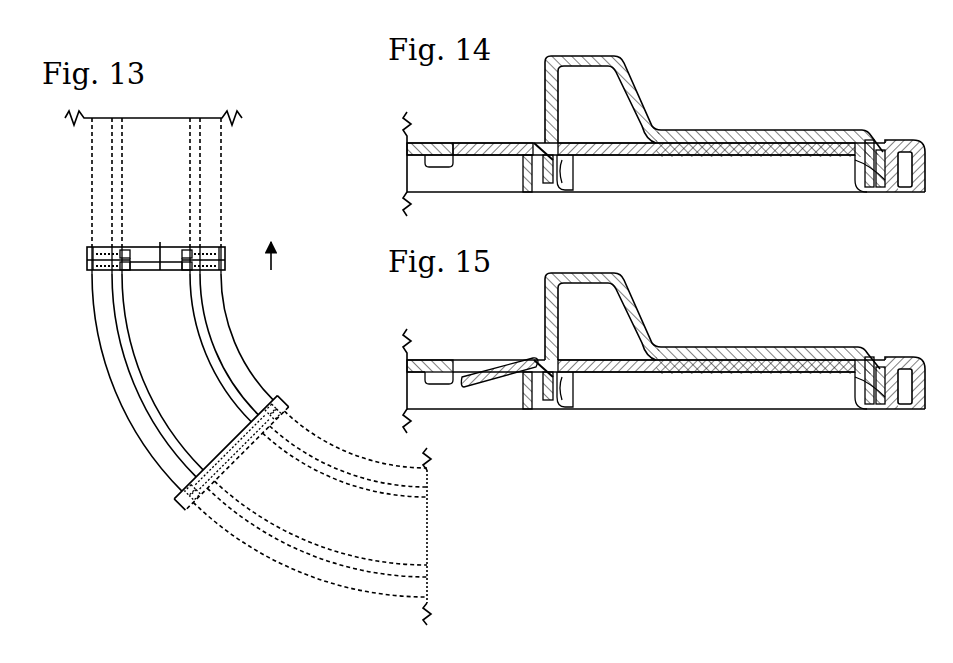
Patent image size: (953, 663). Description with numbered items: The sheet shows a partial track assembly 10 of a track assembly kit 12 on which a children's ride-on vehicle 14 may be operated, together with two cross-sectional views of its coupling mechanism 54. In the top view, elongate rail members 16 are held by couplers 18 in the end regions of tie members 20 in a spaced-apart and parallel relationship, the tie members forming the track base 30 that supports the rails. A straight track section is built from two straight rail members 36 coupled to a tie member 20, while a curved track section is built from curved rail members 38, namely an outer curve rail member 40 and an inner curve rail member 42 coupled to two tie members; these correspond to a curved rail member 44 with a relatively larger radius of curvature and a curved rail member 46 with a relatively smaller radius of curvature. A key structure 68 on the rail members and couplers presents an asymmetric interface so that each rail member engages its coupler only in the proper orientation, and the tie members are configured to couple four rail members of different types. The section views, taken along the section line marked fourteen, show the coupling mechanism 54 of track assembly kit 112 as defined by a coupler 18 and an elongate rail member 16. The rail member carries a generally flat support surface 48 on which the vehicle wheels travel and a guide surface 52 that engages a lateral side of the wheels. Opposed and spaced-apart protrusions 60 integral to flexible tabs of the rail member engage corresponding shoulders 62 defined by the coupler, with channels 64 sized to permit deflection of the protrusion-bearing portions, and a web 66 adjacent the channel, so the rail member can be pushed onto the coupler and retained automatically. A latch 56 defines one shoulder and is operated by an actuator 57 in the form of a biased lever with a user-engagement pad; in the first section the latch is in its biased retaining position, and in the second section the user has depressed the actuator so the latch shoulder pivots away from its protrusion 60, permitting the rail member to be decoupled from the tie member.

In FIG. 13, the track assembly 10 is at (208, 90).
In FIG. 14, the track assembly kit 12 is at (917, 58).
In FIG. 15, the track assembly kit 12 is at (928, 262).
In FIG. 13, the children's ride-on vehicle 14 is at (278, 267).
In FIG. 13, the elongate rail member 16 is at (90, 152).
In FIG. 14, the elongate rail member 16 is at (600, 55).
In FIG. 15, the elongate rail member 16 is at (603, 307).
In FIG. 13, the coupler 18 is at (86, 258).
In FIG. 14, the coupler 18 is at (751, 210).
In FIG. 15, the coupler 18 is at (732, 441).
In FIG. 13, the tie member 20 is at (147, 244).
In FIG. 14, the tie member 20 is at (726, 197).
In FIG. 15, the tie member 20 is at (706, 428).
In FIG. 13, the track base 30 is at (148, 271).
In FIG. 13, the straight rail member 36 is at (92, 182).
In FIG. 13, the curved rail member 38 is at (100, 340).
In FIG. 13, the outer curve rail member 40 is at (105, 360).
In FIG. 13, the inner curve rail member 42 is at (245, 365).
In FIG. 13, the curved rail member with a relatively larger radius of curvature 44 is at (113, 378).
In FIG. 13, the curved rail member with a relatively smaller radius of curvature 46 is at (255, 381).
In FIG. 14, the support surface 48 is at (768, 130).
In FIG. 15, the support surface 48 is at (719, 351).
In FIG. 14, the guide surface 52 is at (641, 96).
In FIG. 15, the guide surface 52 is at (653, 296).
In FIG. 13, the coupling mechanism 54 is at (128, 248).
In FIG. 14, the coupling mechanism 54 is at (545, 200).
In FIG. 15, the coupling mechanism 54 is at (708, 414).
In FIG. 14, the latch 56 is at (496, 142).
In FIG. 15, the latch 56 is at (499, 354).
In FIG. 14, the actuator 57 is at (458, 143).
In FIG. 15, the actuator 57 is at (435, 360).
In FIG. 14, the protrusion 60 is at (531, 160).
In FIG. 15, the protrusion 60 is at (710, 403).
In FIG. 14, the shoulder 62 is at (546, 158).
In FIG. 15, the shoulder 62 is at (716, 367).
In FIG. 14, the channel 64 is at (553, 182).
In FIG. 15, the channel 64 is at (698, 379).
In FIG. 14, the web 66 is at (866, 167).
In FIG. 15, the web 66 is at (849, 411).
In FIG. 13, the key structure 68 is at (97, 250).
In FIG. 14, the track assembly kit 112 is at (885, 72).
In FIG. 15, the track assembly kit 112 is at (664, 347).